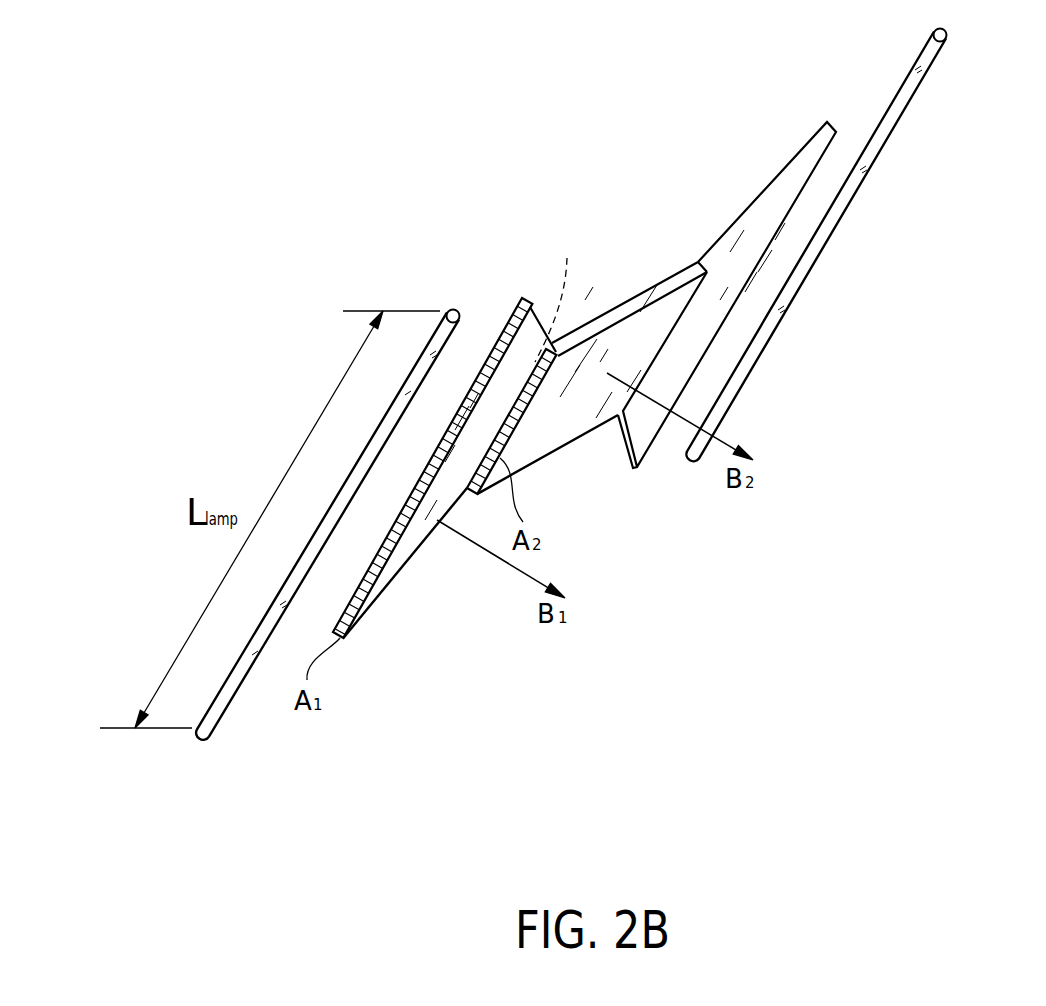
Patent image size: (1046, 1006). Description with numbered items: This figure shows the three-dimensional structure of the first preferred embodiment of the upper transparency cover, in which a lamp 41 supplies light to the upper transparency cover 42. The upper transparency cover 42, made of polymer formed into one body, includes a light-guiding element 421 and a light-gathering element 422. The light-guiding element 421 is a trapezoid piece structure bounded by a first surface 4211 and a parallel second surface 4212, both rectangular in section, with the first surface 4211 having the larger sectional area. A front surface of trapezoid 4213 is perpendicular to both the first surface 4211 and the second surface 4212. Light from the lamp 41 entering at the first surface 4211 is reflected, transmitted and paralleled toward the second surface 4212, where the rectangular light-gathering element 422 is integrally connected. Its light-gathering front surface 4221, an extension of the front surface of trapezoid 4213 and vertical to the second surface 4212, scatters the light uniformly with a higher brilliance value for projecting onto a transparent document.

The lamp 41 is at (440, 333).
The upper transparency cover 42 is at (584, 427).
The light-guiding element 421 is at (532, 468).
The first surface 4211 is at (504, 323).
The second surface 4212 is at (532, 358).
The front surface of trapezoid 4213 is at (417, 540).
The light-gathering element 422 is at (656, 393).
The light-gathering front surface 4221 is at (657, 318).